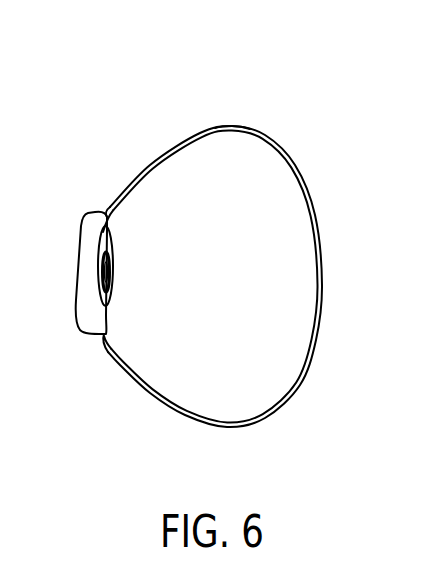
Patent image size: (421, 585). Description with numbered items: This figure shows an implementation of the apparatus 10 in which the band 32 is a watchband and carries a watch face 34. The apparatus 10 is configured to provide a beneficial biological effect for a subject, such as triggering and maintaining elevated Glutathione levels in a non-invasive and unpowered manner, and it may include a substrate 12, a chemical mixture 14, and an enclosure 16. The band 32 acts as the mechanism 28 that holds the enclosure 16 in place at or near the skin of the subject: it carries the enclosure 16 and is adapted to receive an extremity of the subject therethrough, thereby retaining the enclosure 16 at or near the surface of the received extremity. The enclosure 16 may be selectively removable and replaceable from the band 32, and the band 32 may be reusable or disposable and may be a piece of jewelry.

The apparatus 10 is at (336, 88).
The substrate 12 is at (111, 265).
The chemical mixture 14 is at (111, 276).
The enclosure 16 is at (110, 234).
The mechanism 28 is at (242, 106).
The band 32 is at (313, 194).
The watch face 34 is at (82, 230).